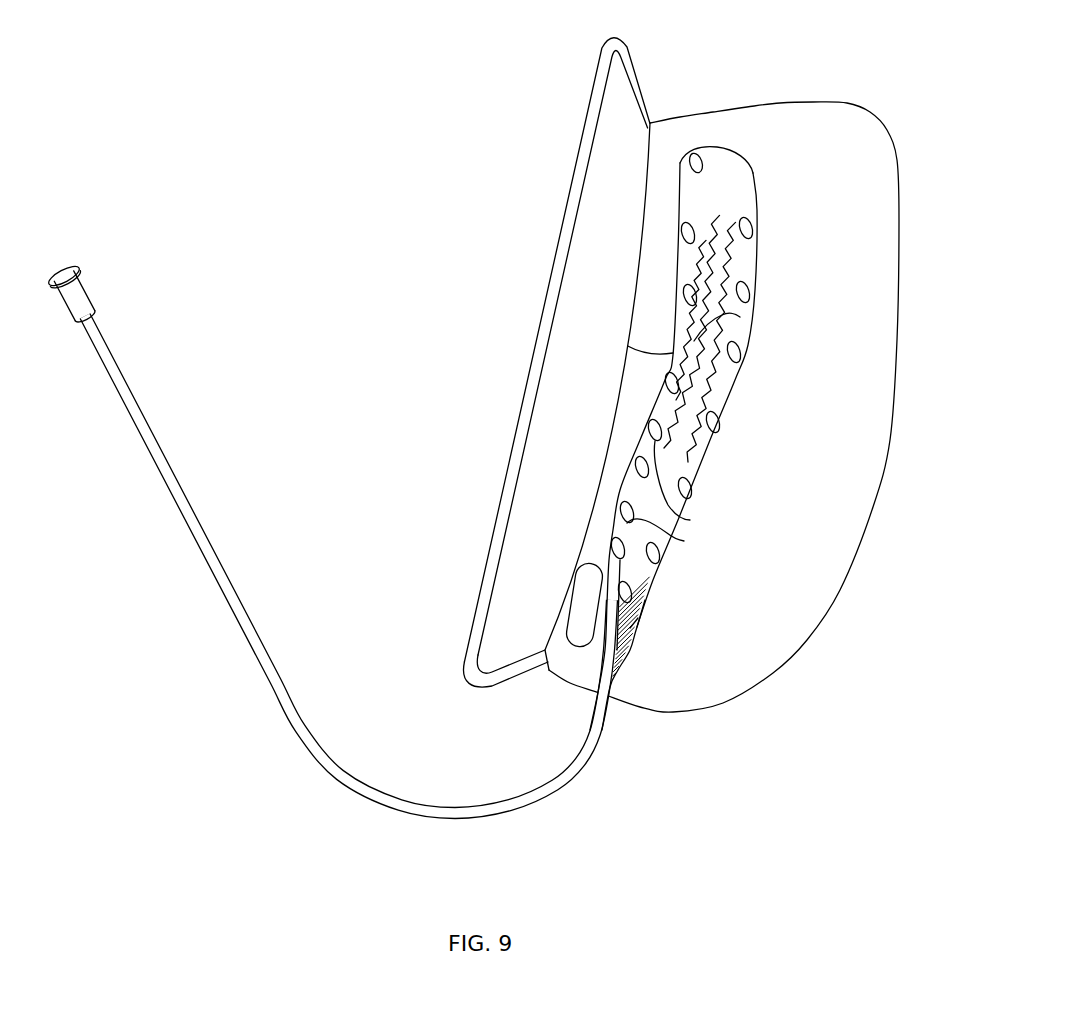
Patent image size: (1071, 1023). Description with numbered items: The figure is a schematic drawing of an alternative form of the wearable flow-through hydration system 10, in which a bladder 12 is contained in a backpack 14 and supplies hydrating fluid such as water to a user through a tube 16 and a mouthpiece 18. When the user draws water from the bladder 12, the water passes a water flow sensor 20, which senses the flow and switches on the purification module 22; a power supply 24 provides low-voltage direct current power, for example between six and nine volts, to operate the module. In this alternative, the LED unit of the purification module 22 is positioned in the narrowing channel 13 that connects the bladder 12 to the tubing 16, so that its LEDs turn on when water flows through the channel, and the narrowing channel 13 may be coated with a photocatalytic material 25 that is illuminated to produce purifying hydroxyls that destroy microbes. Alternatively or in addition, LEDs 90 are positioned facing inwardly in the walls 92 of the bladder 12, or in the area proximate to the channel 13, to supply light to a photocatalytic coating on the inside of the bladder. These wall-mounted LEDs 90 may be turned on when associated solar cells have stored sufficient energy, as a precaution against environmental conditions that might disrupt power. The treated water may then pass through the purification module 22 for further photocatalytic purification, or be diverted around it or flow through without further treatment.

The wearable flow-through hydration system 10 is at (681, 365).
The bladder 12 is at (650, 351).
The narrowing channel 13 is at (638, 606).
The backpack 14 is at (830, 102).
The tube 16 is at (316, 764).
The mouthpiece 18 is at (84, 297).
The water flow sensor 20 is at (615, 578).
The purification module 22 is at (624, 648).
The power supply 24 is at (572, 597).
The photocatalytic material 25 is at (735, 250).
The LEDs 90 is at (694, 160).
The walls 92 is at (740, 317).